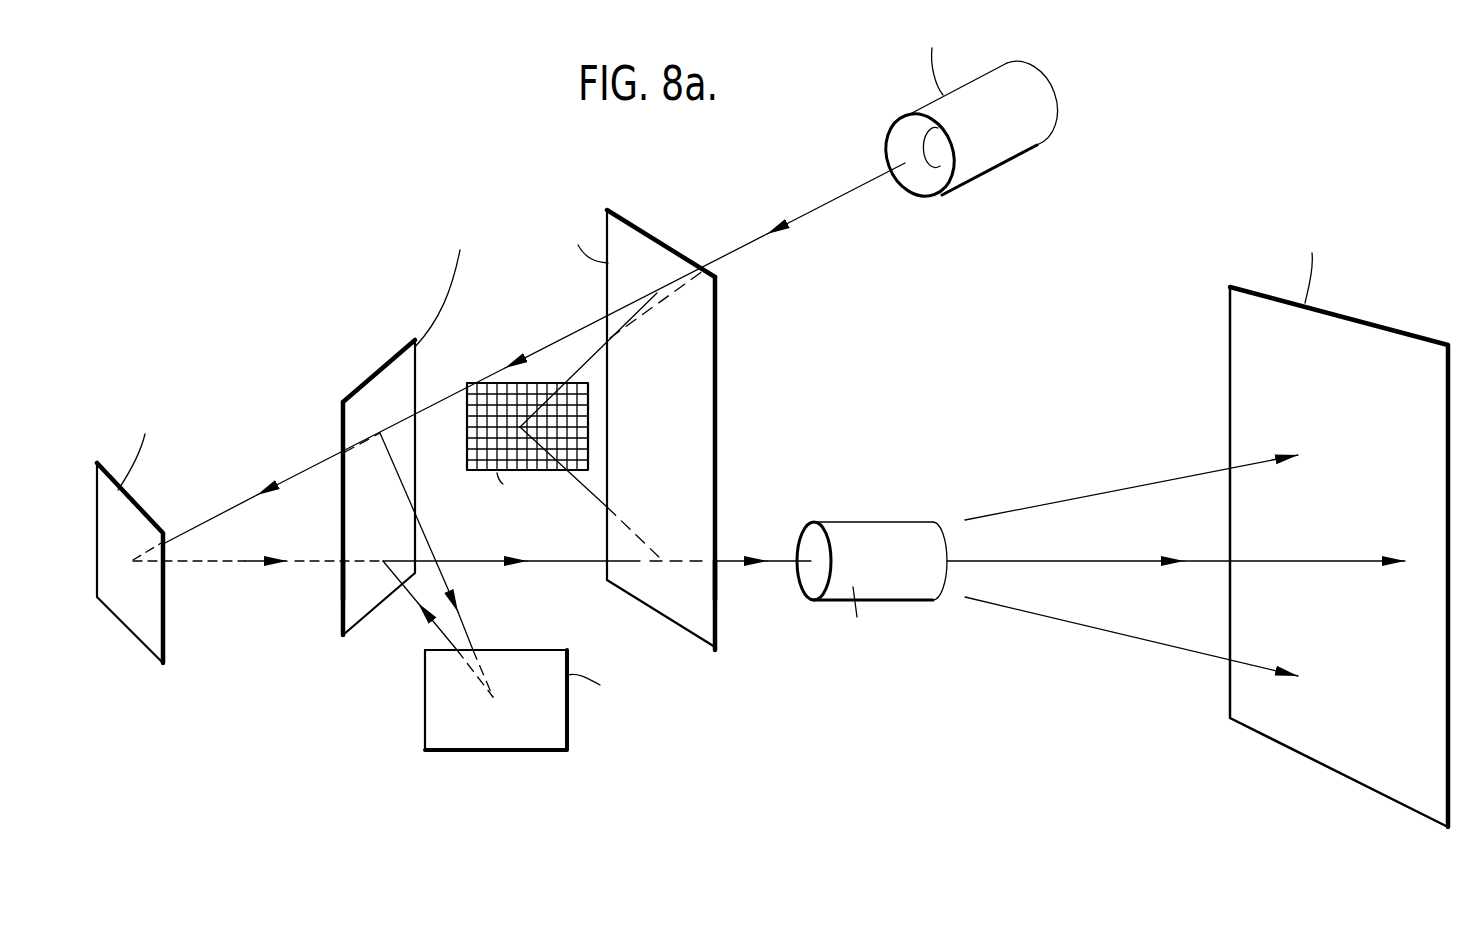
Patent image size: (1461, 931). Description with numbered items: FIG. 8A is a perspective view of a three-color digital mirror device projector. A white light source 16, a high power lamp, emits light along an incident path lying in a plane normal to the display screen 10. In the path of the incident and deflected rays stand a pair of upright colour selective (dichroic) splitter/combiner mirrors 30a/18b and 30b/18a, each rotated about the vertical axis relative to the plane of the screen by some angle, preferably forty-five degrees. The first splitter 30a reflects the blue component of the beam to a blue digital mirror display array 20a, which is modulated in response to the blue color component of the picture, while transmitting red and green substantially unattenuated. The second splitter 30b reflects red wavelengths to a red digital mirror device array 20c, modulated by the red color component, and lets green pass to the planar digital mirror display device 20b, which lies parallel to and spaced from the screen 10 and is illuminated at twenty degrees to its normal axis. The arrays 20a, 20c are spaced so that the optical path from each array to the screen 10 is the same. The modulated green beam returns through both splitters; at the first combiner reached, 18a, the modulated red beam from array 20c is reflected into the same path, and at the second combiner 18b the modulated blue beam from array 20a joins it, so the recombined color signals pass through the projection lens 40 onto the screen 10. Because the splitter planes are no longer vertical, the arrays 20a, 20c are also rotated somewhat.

The display screen 10 is at (1242, 358).
The white light source 16 is at (1030, 117).
The first splitter/combiner 18a is at (343, 577).
The second splitter/combiner 18b is at (716, 558).
The blue digital mirror display array 20a is at (496, 380).
The planar digital mirror display device 20b is at (137, 630).
The red digital mirror device array 20c is at (555, 742).
The first splitter/combiner mirror 30a is at (718, 283).
The second splitter/combiner mirror 30b is at (360, 396).
The projection lens 40 is at (881, 535).